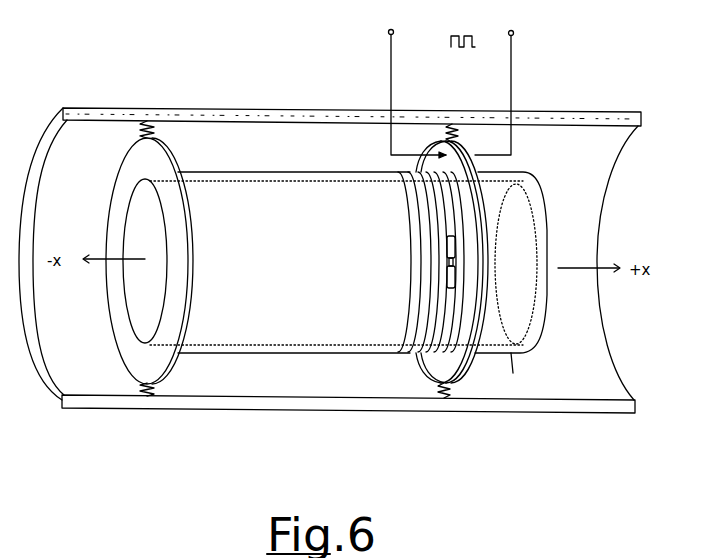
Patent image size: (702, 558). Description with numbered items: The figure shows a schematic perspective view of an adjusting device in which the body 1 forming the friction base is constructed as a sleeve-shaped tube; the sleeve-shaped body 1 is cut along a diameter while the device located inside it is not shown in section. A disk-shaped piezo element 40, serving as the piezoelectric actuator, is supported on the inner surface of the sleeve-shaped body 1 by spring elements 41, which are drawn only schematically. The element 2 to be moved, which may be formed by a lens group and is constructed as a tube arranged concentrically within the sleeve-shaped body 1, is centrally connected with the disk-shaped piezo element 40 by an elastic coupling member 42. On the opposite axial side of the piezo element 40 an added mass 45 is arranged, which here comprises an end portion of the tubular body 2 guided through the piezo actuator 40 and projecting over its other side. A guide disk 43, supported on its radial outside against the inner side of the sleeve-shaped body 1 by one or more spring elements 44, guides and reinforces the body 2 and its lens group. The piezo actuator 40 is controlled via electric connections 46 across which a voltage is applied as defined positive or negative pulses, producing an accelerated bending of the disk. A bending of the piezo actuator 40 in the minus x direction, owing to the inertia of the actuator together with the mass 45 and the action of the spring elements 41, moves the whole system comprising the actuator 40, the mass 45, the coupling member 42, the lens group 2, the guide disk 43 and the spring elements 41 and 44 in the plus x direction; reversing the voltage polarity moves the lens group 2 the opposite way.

The sleeve-shaped body 1 is at (212, 113).
The element to be moved 2 is at (328, 172).
The disk-shaped piezo element 40 is at (455, 386).
The spring elements 41 is at (452, 120).
The elastic coupling member 42 is at (403, 358).
The guide disk 43 is at (136, 360).
The spring elements 44 is at (143, 119).
The added mass 45 is at (513, 373).
The electric connections 46 is at (454, 80).